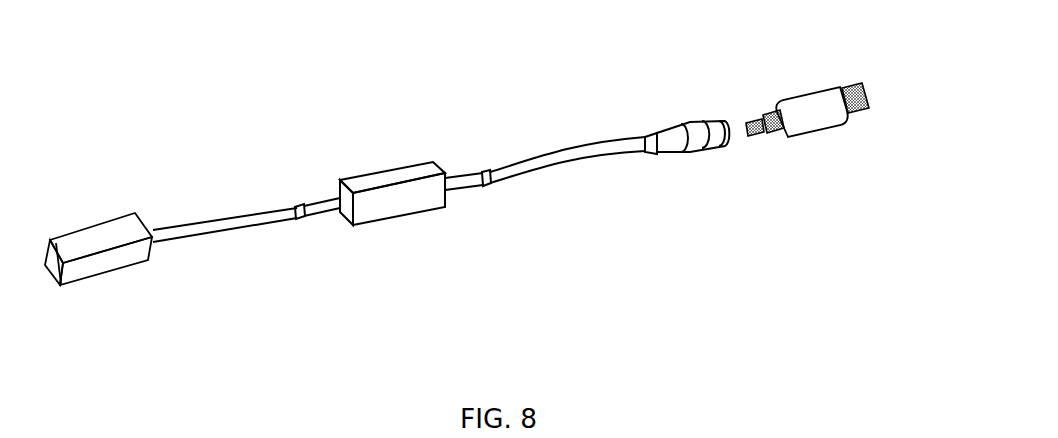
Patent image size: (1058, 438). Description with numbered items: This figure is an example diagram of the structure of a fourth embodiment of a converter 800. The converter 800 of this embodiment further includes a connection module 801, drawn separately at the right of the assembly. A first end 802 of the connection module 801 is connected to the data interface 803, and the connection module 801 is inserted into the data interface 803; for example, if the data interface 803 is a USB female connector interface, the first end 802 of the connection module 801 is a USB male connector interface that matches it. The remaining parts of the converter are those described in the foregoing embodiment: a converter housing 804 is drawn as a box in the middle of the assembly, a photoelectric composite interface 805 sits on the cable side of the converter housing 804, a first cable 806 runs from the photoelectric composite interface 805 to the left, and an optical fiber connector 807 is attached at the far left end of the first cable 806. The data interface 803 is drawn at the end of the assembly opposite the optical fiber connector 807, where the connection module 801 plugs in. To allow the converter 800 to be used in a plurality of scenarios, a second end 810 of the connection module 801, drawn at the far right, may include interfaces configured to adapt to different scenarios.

The converter 800 is at (358, 110).
The connection module 801 is at (807, 92).
The first end 802 is at (752, 119).
The data interface 803 is at (723, 123).
The converter housing 804 is at (387, 212).
The photoelectric composite interface 805 is at (320, 213).
The first cable 806 is at (237, 225).
The optical fiber connector 807 is at (95, 243).
The second end 810 is at (866, 95).